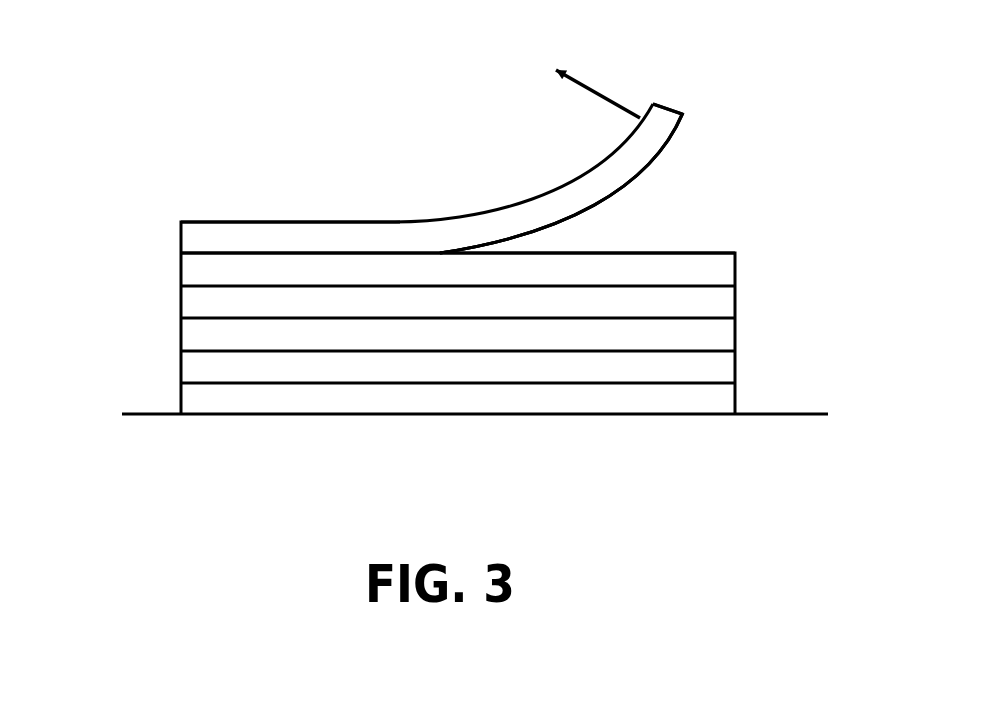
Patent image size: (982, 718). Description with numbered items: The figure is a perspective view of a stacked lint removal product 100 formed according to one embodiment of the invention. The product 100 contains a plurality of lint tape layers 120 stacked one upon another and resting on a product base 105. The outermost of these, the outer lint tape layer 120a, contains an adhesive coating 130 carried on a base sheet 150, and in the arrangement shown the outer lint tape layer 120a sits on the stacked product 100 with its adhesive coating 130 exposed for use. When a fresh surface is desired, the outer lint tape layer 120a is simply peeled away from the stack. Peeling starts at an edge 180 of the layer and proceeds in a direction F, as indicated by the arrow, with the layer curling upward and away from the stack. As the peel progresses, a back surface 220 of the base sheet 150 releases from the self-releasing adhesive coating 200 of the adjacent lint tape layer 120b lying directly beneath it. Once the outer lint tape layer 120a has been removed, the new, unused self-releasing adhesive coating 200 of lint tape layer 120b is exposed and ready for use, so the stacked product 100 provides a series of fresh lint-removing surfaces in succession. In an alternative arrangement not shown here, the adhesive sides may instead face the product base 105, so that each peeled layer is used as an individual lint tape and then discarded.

The stacked lint removal product 100 is at (291, 78).
The product base 105 is at (158, 412).
The lint tape layers 120 is at (748, 323).
The outer lint tape layer 120a is at (662, 115).
The lint tape layer 120b is at (200, 270).
The adhesive coating 130 is at (291, 220).
The base sheet 150 is at (357, 232).
The edge 180 is at (653, 103).
The self-releasing adhesive coating 200 is at (682, 250).
The back surface 220 is at (686, 135).
The peeling direction F is at (582, 85).